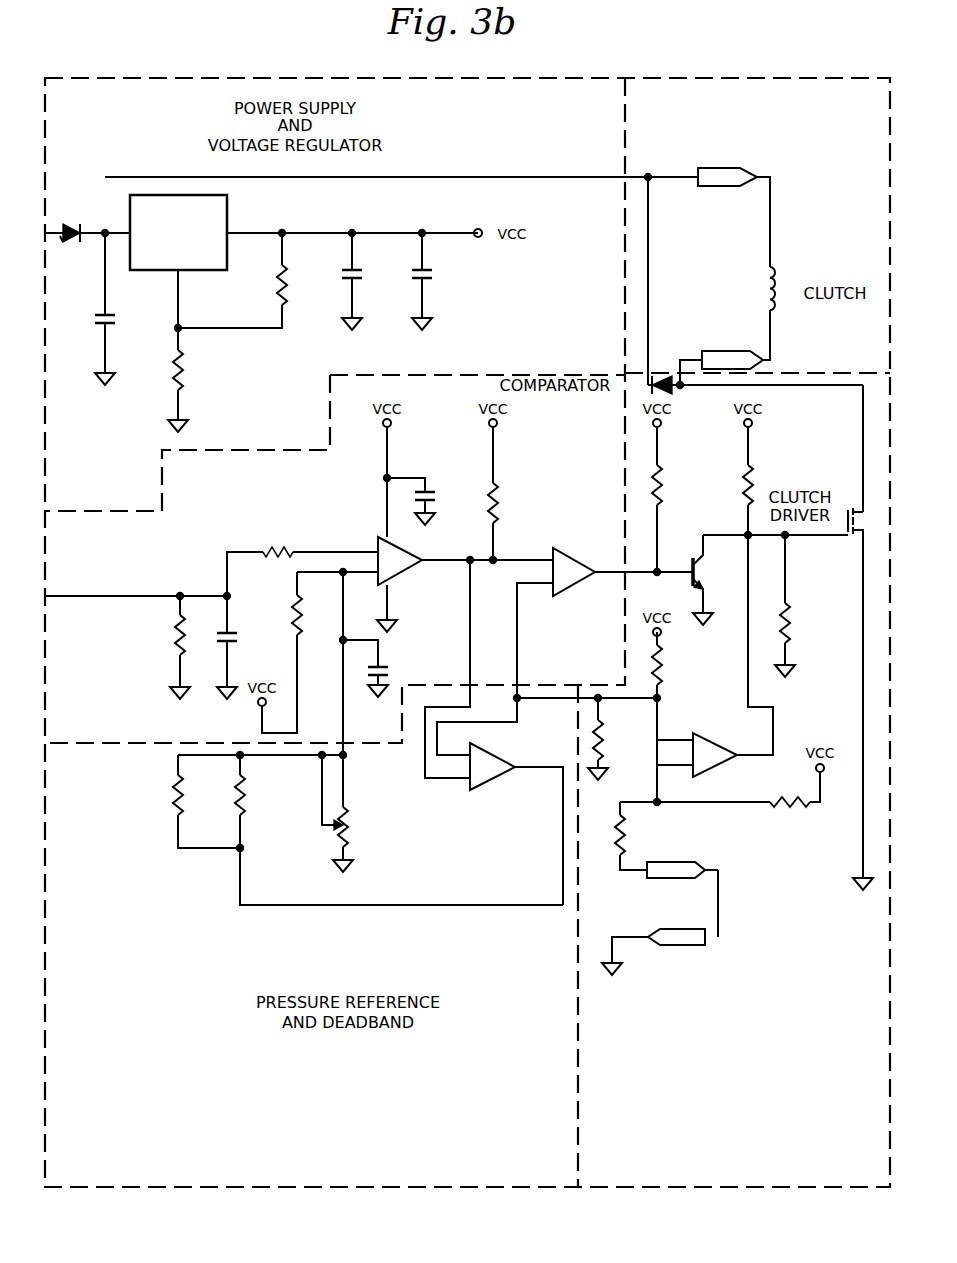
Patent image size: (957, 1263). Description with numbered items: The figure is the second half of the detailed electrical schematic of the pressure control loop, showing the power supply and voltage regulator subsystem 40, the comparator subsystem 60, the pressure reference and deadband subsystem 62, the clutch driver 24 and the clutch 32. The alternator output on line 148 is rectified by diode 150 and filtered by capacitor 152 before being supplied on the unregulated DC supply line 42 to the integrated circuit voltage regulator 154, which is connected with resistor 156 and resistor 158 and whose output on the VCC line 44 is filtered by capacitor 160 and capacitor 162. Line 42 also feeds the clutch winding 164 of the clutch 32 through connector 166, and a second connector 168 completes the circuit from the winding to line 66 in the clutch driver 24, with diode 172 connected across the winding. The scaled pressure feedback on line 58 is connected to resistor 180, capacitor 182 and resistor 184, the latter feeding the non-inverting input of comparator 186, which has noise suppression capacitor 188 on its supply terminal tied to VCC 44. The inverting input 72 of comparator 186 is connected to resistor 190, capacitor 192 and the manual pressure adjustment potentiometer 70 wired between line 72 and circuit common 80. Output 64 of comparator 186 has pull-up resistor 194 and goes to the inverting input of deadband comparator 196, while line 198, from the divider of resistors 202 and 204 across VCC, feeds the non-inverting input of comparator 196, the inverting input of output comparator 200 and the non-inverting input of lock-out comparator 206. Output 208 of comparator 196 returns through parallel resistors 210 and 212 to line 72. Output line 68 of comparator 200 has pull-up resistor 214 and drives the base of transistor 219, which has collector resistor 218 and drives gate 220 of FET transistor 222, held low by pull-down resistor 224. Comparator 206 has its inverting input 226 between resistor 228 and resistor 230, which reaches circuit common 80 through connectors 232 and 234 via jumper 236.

The alternator output line 148 is at (68, 228).
The diode 150 is at (66, 240).
The unregulated DC supply line 42 is at (107, 240).
The integrated circuit voltage regulator 154 is at (228, 226).
The regulated VCC supply line 44 is at (450, 233).
The 100 mf capacitor 160 is at (355, 278).
The 0.1 mf capacitor 162 is at (426, 278).
The 360 ohm resistor 158 is at (278, 288).
The 2.4K resistor 156 is at (182, 382).
The 4700 mf capacitor 152 is at (113, 324).
The circuit common 80 is at (102, 385).
The power supply and voltage regulator subsystem 40 is at (540, 338).
The connector 166 is at (718, 168).
The clutch winding 164 is at (765, 292).
The second connector 168 is at (728, 354).
The clutch 32 is at (832, 357).
The diode 172 is at (675, 395).
The clutch driver line 66 is at (805, 385).
The 510 ohm collector resistor 218 is at (743, 468).
The FET transistor 222 is at (845, 490).
The 10K pull-up resistor 214 is at (660, 480).
The 2N2222 transistor 219 is at (705, 566).
The gate 220 is at (795, 536).
The 51K pull-down resistor 224 is at (790, 628).
The 10K resistor 202 is at (662, 688).
The lock-out comparator 206 is at (733, 746).
The 10K resistor 204 is at (602, 740).
The inverting input of lock-out comparator 226 is at (702, 805).
The 10K resistor 228 is at (785, 808).
The 100 ohm resistor 230 is at (628, 822).
The connector 232 is at (655, 880).
The connector 234 is at (660, 930).
The jumper 236 is at (722, 897).
The clutch driver 24 is at (814, 945).
The 0.1 mf noise suppression capacitor 188 is at (428, 492).
The comparator subsystem 60 is at (565, 482).
The 10K pull-up resistor 194 is at (497, 495).
The comparator 186 is at (412, 550).
The output line 68 is at (612, 568).
The output comparator 200 is at (565, 590).
The output of comparator 186 64 is at (468, 632).
The 0.1 mf capacitor 192 is at (385, 670).
The voltage divider output line 198 is at (441, 752).
The deadband comparator 196 is at (510, 760).
The pressure reference command line 72 is at (348, 756).
The 100 ohm resistor 184 is at (275, 550).
The 5.6K resistor 190 is at (296, 606).
The 0.1 mf capacitor 182 is at (232, 637).
The scaled pressure feedback output line 58 is at (95, 598).
The 10K resistor 180 is at (176, 638).
The 20K resistor 210 is at (175, 800).
The 30K resistor 212 is at (246, 805).
The external manual pressure adjustment potentiometer 70 is at (315, 852).
The output of deadband comparator 208 is at (478, 905).
The pressure reference and deadband subsystem 62 is at (524, 1022).